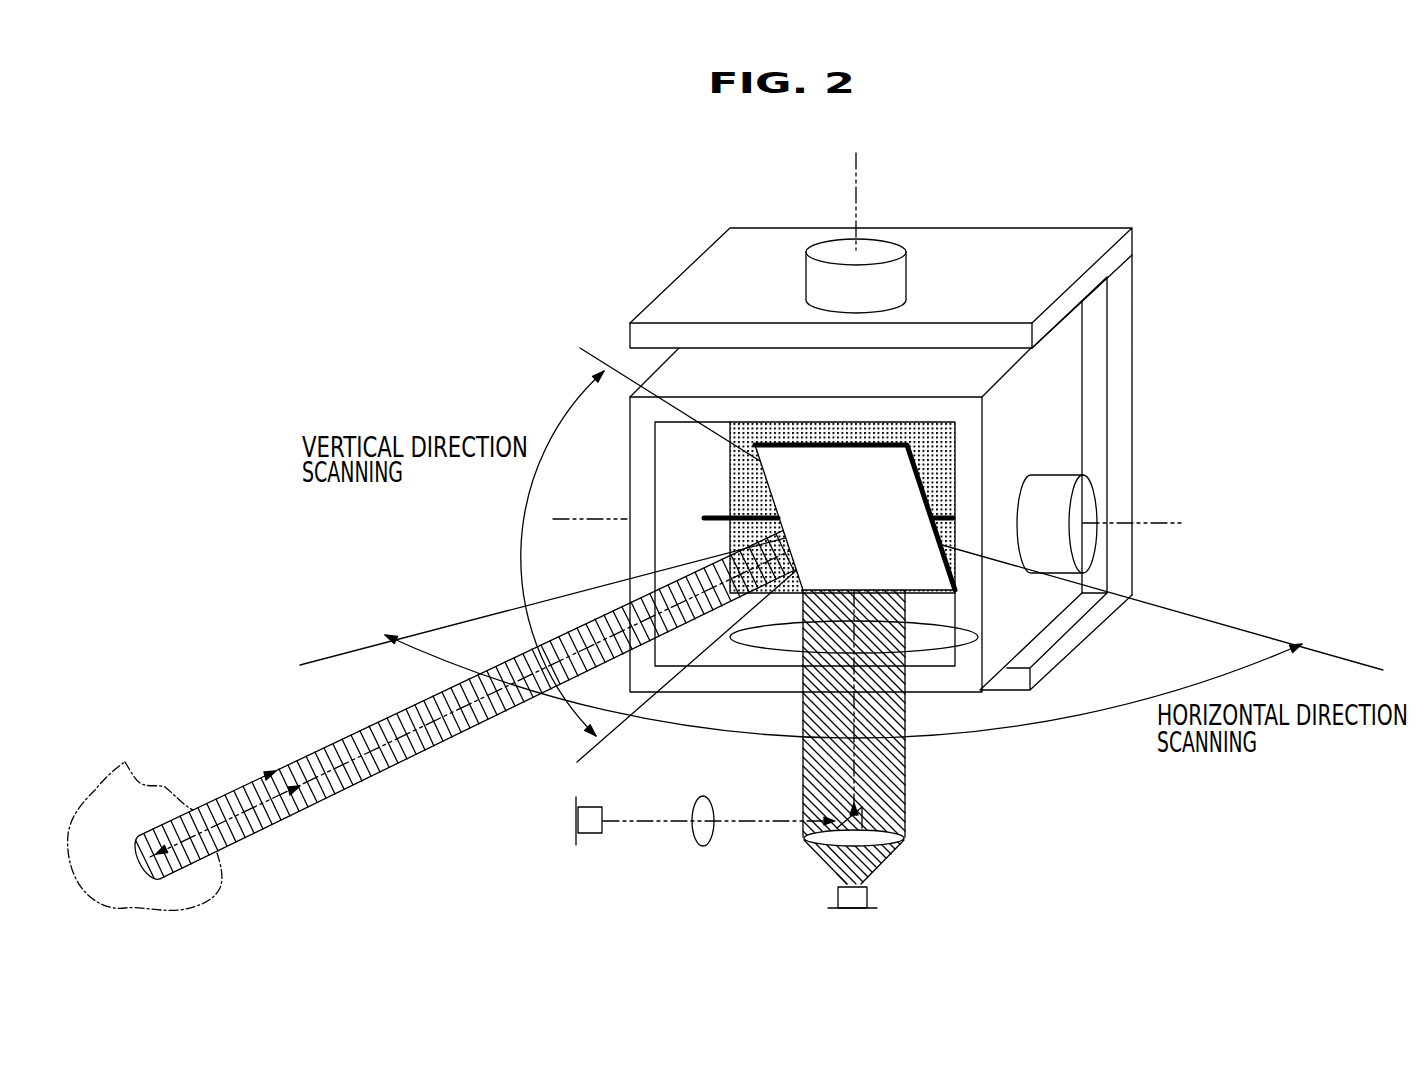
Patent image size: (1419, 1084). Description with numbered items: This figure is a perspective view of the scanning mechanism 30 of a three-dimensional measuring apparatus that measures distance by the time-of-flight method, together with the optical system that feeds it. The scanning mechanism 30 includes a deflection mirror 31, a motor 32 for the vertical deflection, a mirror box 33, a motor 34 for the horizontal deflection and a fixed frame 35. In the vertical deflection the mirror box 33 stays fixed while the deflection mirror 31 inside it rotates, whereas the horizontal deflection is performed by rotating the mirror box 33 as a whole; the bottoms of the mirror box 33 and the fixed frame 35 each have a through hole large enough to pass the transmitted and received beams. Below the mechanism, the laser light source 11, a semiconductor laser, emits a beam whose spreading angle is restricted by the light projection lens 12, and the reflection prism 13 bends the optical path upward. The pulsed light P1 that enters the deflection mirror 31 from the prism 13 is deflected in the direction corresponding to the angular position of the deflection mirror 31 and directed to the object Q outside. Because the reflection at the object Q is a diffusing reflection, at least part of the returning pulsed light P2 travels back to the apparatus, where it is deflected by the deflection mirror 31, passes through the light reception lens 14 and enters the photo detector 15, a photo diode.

The scanning mechanism 30 is at (378, 241).
The deflection mirror 31 is at (922, 490).
The motor for the vertical deflection 32 is at (1085, 499).
The mirror box 33 is at (1067, 363).
The motor for the horizontal deflection 34 is at (888, 241).
The fixed frame 35 is at (1075, 228).
The laser light source 11 is at (592, 833).
The light projection lens 12 is at (703, 846).
The reflection prism 13 is at (862, 817).
The light reception lens 14 is at (903, 838).
The photo detector 15 is at (867, 897).
The object Q is at (138, 778).
The pulsed light P1 is at (858, 762).
The pulsed light P2 is at (804, 767).